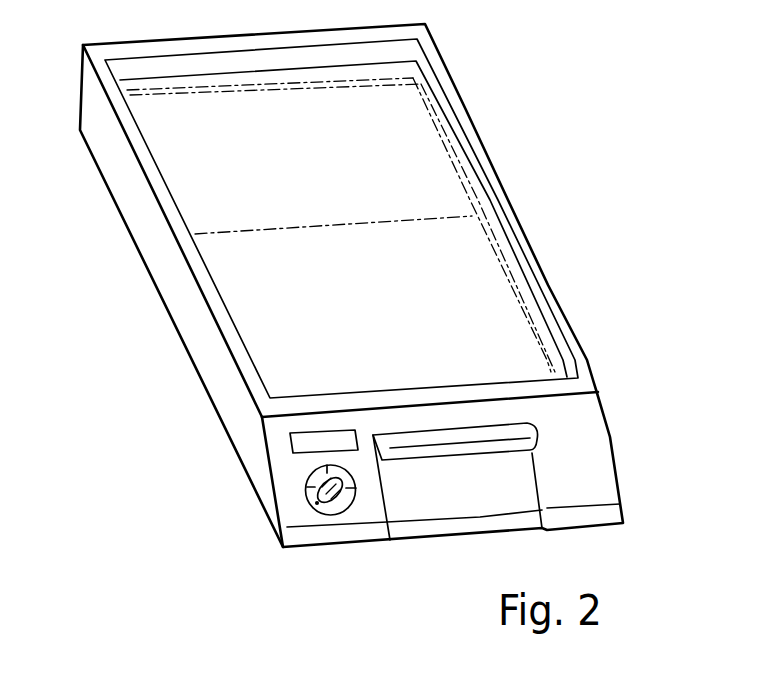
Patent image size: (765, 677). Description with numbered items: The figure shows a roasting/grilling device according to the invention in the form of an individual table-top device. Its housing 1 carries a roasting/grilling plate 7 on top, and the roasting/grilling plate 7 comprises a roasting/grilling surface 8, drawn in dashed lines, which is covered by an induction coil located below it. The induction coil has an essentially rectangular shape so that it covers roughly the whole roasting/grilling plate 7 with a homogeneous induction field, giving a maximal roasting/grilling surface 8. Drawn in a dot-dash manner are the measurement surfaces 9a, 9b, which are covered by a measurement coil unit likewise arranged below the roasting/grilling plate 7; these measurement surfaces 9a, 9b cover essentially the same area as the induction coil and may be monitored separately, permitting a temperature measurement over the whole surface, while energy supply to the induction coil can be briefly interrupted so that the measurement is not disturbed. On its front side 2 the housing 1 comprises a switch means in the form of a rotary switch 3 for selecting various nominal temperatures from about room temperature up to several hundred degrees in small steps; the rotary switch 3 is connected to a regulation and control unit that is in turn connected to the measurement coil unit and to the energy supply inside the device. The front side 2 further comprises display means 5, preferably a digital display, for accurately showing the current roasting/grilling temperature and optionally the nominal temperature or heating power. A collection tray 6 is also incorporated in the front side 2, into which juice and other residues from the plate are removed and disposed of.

The housing 1 is at (167, 279).
The front side 2 is at (570, 430).
The rotary switch 3 is at (306, 487).
The display means 5 is at (290, 443).
The collection tray 6 is at (515, 477).
The roasting/grilling plate 7 is at (503, 323).
The roasting/grilling surface 8 is at (377, 73).
The measurement surface 9a is at (413, 143).
The measurement surface 9b is at (470, 274).